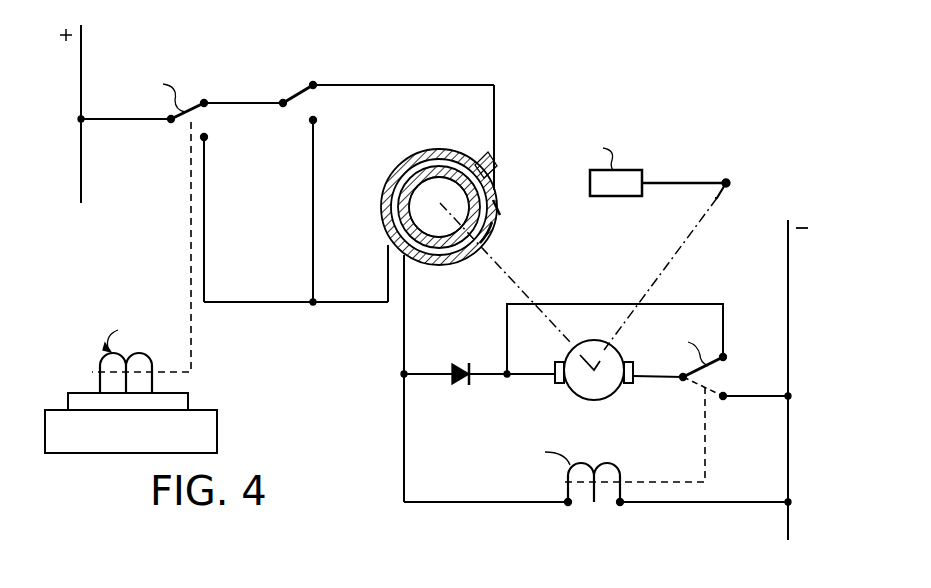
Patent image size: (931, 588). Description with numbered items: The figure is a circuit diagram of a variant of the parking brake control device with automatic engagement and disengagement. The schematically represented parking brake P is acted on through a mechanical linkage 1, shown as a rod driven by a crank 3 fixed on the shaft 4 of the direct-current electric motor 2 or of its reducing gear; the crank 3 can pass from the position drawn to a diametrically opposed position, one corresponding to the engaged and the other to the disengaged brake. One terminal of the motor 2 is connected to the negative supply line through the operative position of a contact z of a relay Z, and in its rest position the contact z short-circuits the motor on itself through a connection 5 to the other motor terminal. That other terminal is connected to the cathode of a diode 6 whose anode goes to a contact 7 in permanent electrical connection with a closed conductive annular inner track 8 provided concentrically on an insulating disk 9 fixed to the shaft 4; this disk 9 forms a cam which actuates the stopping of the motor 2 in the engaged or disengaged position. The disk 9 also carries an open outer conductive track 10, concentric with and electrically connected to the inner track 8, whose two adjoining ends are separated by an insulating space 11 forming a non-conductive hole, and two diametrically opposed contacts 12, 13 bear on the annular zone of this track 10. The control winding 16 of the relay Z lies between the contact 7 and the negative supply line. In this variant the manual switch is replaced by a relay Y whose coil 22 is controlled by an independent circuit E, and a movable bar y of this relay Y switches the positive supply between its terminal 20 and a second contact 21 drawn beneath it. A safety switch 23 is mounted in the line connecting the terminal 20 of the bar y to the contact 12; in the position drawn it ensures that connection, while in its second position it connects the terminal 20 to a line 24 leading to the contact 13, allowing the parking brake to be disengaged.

The mechanical linkage 1 is at (680, 180).
The electric motor 2 is at (570, 388).
The crank 3 is at (715, 198).
The shaft 4 is at (508, 274).
The connection 5 is at (593, 303).
The diode 6 is at (461, 386).
The contact 7 is at (414, 208).
The conductive annular inner track 8 is at (437, 167).
The insulating disk 9 is at (455, 264).
The outer conductive track 10 is at (497, 224).
The insulating space 11 is at (503, 212).
The contact 12 is at (499, 205).
The contact 13 is at (383, 208).
The control winding 16 is at (617, 462).
The terminal 20 is at (204, 101).
The switch contact lead 21 is at (198, 142).
The coil 22 is at (153, 364).
The safety switch 23 is at (322, 100).
The line 24 is at (311, 160).
The parking brake P is at (615, 165).
The independent circuit E is at (204, 428).
The relay Y is at (117, 334).
The relay Z is at (548, 453).
The movable bar y is at (168, 92).
The contact z is at (733, 365).